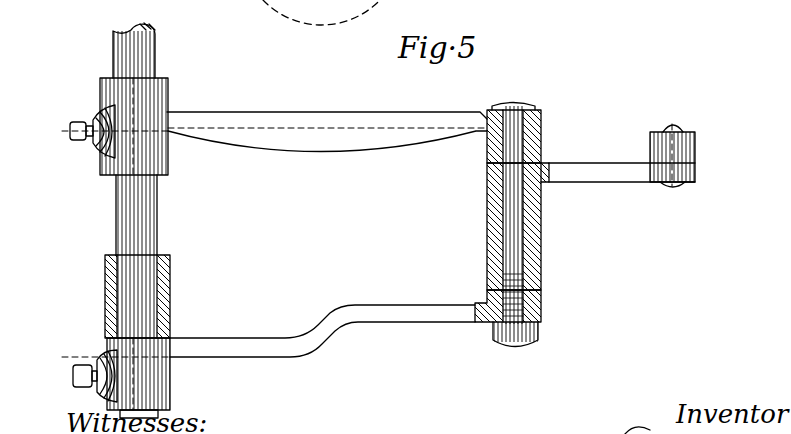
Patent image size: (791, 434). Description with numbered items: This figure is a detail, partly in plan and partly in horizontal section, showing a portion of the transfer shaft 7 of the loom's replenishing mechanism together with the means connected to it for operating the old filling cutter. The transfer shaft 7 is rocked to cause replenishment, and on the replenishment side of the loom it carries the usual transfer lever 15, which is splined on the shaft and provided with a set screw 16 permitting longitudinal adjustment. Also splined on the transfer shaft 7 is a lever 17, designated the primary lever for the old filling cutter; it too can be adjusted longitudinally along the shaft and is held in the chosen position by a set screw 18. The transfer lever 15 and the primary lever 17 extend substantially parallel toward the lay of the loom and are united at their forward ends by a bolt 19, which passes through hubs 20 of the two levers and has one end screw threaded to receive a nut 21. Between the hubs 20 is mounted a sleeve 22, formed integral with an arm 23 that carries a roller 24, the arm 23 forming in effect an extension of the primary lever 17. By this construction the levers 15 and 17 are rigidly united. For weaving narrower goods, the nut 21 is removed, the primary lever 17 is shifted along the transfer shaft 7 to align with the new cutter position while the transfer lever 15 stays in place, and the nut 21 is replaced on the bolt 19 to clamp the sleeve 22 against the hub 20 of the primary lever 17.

The transfer shaft 7 is at (116, 33).
The transfer lever 15 is at (370, 319).
The set screw 16 is at (77, 366).
The primary lever 17 is at (288, 118).
The set screw 18 is at (76, 122).
The bolt 19 is at (527, 128).
The hubs 20 is at (538, 114).
The nut 21 is at (538, 338).
The sleeve 22 is at (542, 236).
The arm 23 is at (608, 183).
The roller 24 is at (697, 149).